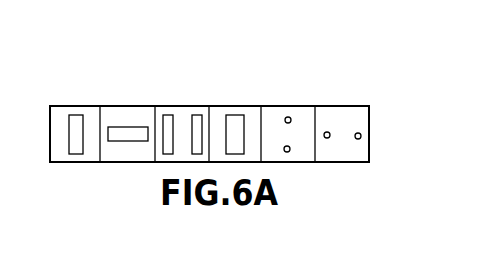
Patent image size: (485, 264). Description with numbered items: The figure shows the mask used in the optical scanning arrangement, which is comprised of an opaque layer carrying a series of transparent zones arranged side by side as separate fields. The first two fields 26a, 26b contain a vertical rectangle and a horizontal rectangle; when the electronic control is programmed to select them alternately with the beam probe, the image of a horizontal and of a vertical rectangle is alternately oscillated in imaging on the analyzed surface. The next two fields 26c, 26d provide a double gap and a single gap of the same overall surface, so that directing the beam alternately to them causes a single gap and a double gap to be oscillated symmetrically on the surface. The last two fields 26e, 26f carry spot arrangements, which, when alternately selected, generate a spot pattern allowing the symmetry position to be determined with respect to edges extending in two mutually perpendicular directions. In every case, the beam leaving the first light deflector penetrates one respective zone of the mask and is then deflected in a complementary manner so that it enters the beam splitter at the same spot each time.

The field of mask 26a is at (73, 117).
The field of mask 26b is at (120, 131).
The field of mask 26c is at (200, 118).
The field of mask 26d is at (231, 120).
The field of mask 26e is at (286, 146).
The field of mask 26f is at (356, 133).